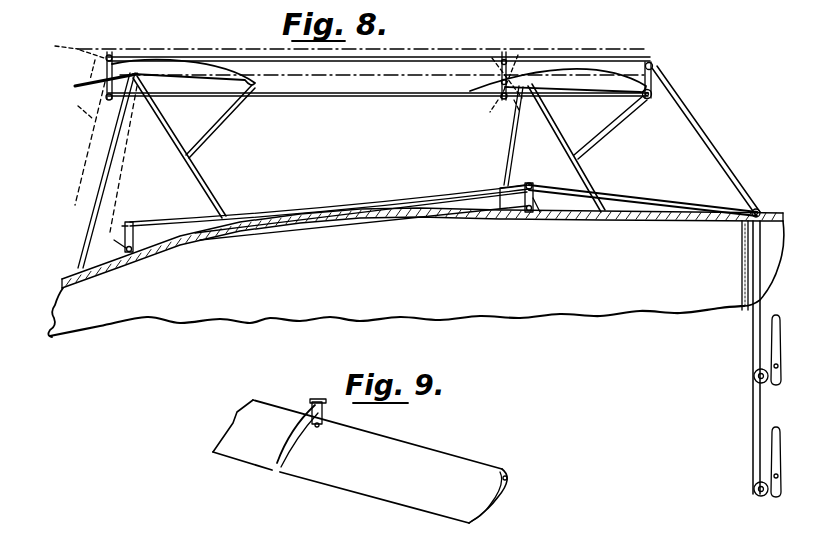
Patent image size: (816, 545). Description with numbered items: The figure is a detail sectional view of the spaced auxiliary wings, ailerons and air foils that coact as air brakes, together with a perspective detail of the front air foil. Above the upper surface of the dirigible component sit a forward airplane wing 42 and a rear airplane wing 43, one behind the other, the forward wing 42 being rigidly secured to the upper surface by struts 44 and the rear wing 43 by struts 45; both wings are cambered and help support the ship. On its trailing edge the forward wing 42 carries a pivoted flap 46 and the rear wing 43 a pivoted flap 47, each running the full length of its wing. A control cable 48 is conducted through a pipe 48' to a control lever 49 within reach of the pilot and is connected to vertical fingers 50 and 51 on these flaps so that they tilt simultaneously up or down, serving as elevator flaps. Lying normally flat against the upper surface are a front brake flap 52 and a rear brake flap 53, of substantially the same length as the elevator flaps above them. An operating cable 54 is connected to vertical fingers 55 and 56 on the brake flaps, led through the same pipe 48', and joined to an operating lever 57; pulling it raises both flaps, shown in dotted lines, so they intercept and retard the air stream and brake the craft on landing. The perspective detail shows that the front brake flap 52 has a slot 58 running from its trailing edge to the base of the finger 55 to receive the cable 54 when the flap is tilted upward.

In FIG. 8, the forward airplane wing 42 is at (612, 60).
In FIG. 8, the rear airplane wing 43 is at (210, 62).
In FIG. 8, the struts 44 is at (556, 118).
In FIG. 8, the struts 45 is at (121, 152).
In FIG. 8, the pivoted flap 46 is at (500, 66).
In FIG. 8, the pivoted flap 47 is at (104, 94).
In FIG. 8, the control cable 48 is at (403, 191).
In FIG. 8, the pipe 48' is at (718, 265).
In FIG. 8, the control lever 49 is at (772, 342).
In FIG. 8, the vertical finger 50 is at (501, 100).
In FIG. 8, the vertical finger 51 is at (103, 118).
In FIG. 8, the front brake flap 52 is at (470, 203).
In FIG. 9, the front brake flap 52 is at (420, 453).
In FIG. 8, the rear brake flap 53 is at (72, 273).
In FIG. 8, the operating cable 54 is at (378, 200).
In FIG. 9, the operating cable 54 is at (322, 402).
In FIG. 8, the vertical finger 55 is at (554, 148).
In FIG. 9, the vertical finger 55 is at (323, 409).
In FIG. 8, the vertical finger 56 is at (133, 223).
In FIG. 8, the operating lever 57 is at (772, 456).
In FIG. 9, the slot 58 is at (300, 442).